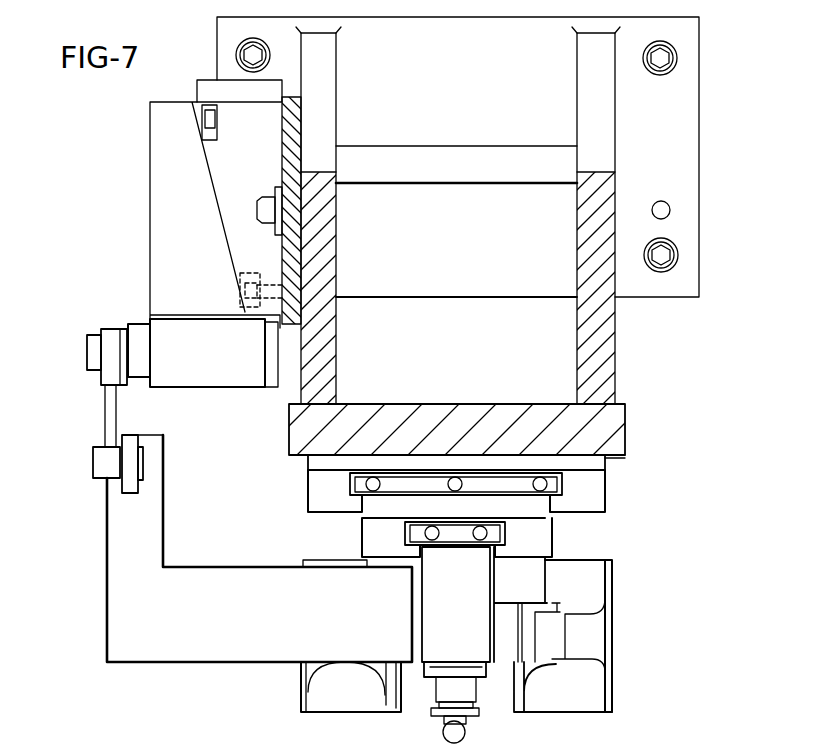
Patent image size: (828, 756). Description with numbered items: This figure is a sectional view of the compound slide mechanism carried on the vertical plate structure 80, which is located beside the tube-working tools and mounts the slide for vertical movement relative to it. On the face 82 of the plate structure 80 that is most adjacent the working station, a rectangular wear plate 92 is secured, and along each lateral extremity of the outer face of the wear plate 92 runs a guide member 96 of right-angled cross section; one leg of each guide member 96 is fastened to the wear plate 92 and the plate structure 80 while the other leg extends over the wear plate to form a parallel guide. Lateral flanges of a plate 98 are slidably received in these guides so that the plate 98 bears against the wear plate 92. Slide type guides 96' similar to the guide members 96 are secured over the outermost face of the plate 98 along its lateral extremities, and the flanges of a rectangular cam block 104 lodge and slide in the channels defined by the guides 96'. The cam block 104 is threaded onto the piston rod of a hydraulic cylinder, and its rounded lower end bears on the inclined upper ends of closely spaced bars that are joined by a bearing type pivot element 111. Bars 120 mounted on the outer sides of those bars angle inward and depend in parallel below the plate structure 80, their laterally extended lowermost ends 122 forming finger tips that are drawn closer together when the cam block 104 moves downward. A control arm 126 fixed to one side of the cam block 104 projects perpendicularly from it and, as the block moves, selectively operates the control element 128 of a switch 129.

The vertical plate structure 80 is at (628, 437).
The face of the plate 82 is at (610, 458).
The wear plate 92 is at (316, 466).
The guide member 96 is at (484, 491).
The slide type guides 96' is at (553, 537).
The plate 98 is at (378, 513).
The cam block 104 is at (473, 584).
The bearing type pivot element 111 is at (460, 682).
The bars 120 is at (578, 636).
The lowermost ends 122 is at (588, 684).
The control arm 126 is at (319, 624).
The control element 128 is at (143, 465).
The switch 129 is at (229, 370).